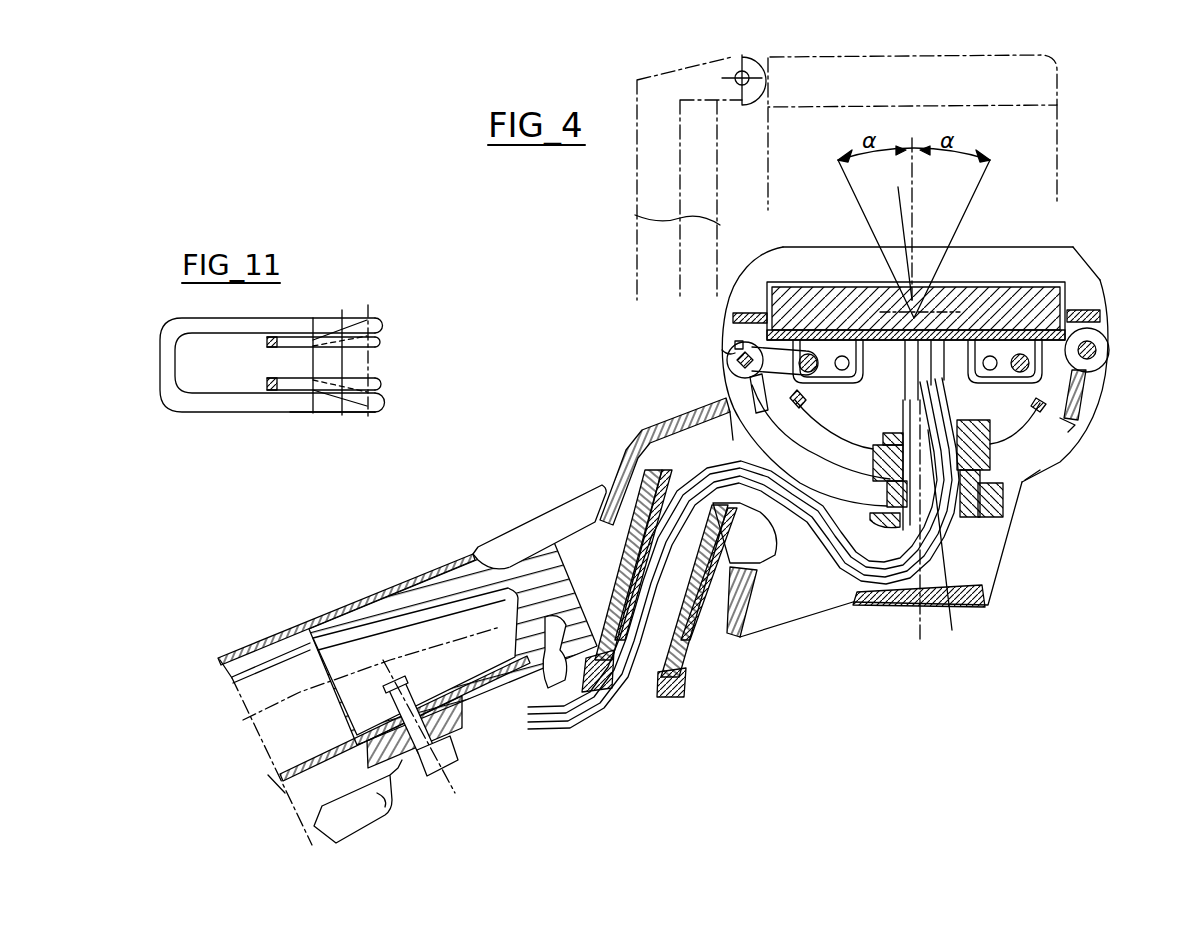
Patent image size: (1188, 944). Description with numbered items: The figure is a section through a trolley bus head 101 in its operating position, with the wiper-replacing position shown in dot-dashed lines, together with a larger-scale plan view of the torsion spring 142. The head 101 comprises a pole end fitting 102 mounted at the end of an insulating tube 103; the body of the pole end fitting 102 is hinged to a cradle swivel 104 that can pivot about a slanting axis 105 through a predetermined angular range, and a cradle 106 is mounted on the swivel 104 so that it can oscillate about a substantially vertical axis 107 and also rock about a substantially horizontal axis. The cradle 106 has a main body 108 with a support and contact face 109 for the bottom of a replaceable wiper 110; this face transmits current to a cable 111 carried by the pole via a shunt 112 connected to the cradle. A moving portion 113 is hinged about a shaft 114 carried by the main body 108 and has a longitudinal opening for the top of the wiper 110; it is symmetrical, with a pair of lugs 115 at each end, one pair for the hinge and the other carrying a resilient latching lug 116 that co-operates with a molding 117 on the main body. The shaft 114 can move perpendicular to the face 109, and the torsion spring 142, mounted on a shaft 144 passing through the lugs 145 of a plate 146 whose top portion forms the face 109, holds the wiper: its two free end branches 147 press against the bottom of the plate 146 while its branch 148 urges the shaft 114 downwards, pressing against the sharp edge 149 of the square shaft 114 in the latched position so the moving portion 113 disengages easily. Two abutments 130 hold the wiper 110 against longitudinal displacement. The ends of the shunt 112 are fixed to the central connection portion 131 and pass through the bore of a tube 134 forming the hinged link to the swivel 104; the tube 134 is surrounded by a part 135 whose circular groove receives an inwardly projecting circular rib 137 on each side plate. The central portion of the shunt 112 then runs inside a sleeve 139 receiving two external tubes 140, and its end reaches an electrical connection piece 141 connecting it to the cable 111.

In FIG. 4, the head 101 is at (530, 488).
In FIG. 4, the pole end fitting 102 is at (540, 562).
In FIG. 4, the insulating tube 103 is at (372, 602).
In FIG. 4, the cradle swivel 104 is at (988, 565).
In FIG. 4, the slanting axis 105 is at (660, 430).
In FIG. 4, the cradle 106 is at (1072, 453).
In FIG. 4, the substantially vertical axis 107 is at (913, 620).
In FIG. 4, the main body 108 is at (1048, 450).
In FIG. 4, the support and contact face 109 is at (1100, 318).
In FIG. 4, the replaceable wiper 110 is at (1058, 72).
In FIG. 4, the cable 111 is at (312, 830).
In FIG. 4, the shunt 112 is at (565, 740).
In FIG. 4, the moving portion 113 is at (805, 262).
In FIG. 4, the shaft 114 is at (735, 362).
In FIG. 4, the lugs 115 is at (1105, 348).
In FIG. 4, the resilient latching lug 116 is at (1085, 405).
In FIG. 4, the molding 117 is at (1068, 428).
In FIG. 4, the abutments 130 is at (757, 300).
In FIG. 4, the central connection portion 131 is at (950, 378).
In FIG. 4, the tube 134 is at (992, 470).
In FIG. 4, the part 135 is at (872, 468).
In FIG. 4, the circular rib 137 is at (825, 430).
In FIG. 4, the sleeve 139 is at (672, 690).
In FIG. 4, the external tubes 140 is at (722, 640).
In FIG. 4, the electrical connection piece 141 is at (465, 735).
In FIG. 11, the torsion spring 142 is at (208, 414).
In FIG. 4, the torsion spring 142 is at (760, 385).
In FIG. 4, the shaft 144 is at (808, 374).
In FIG. 4, the lugs 145 is at (858, 384).
In FIG. 4, the plate 146 is at (876, 350).
In FIG. 11, the free end branches 147 is at (290, 382).
In FIG. 11, the branch 148 is at (165, 368).
In FIG. 4, the branch 148 is at (740, 340).
In FIG. 4, the sharp edge 149 is at (730, 355).